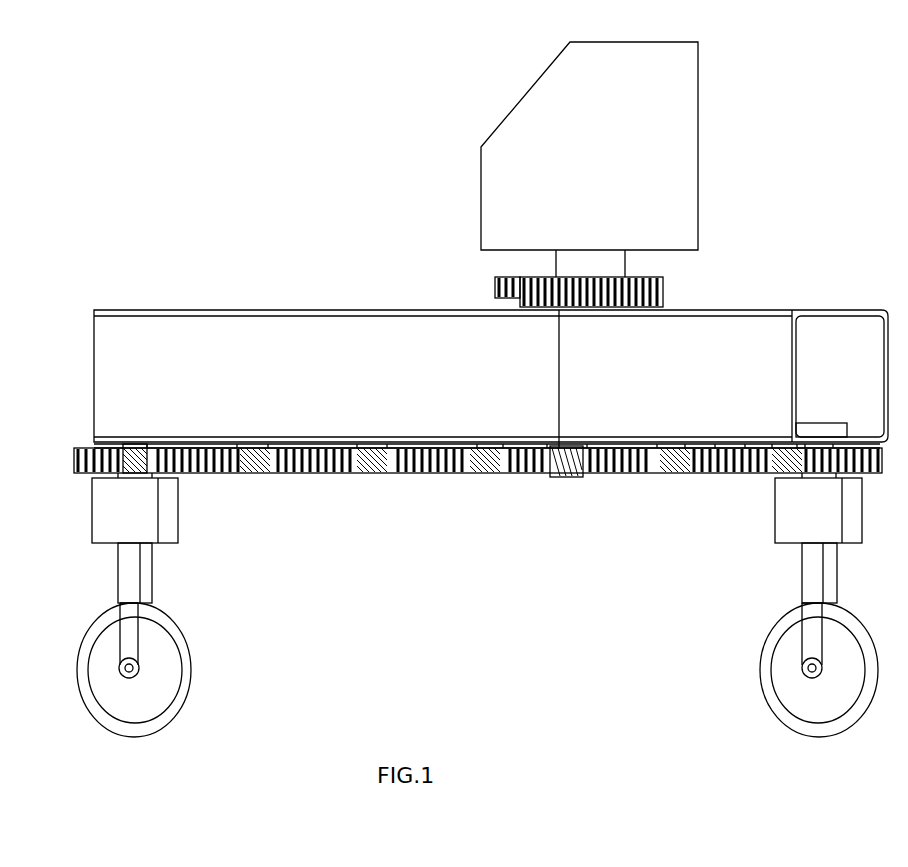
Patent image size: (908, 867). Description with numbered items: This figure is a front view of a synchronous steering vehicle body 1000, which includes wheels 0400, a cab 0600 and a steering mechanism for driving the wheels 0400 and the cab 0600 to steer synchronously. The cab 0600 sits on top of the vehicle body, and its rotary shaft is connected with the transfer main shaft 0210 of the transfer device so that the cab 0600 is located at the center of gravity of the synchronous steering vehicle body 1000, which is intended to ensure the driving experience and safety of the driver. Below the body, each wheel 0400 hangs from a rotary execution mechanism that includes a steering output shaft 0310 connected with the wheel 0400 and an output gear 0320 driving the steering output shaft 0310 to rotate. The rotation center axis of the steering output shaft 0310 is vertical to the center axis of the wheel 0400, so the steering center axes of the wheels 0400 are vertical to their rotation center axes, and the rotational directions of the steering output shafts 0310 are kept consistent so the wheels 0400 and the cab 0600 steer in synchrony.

The synchronous steering vehicle body 1000 is at (328, 308).
The cab 0600 is at (685, 183).
The transfer main shaft 0210 is at (625, 270).
The steering output shaft 0310 is at (127, 445).
The output gear 0320 is at (78, 472).
The wheel 0400 is at (165, 660).